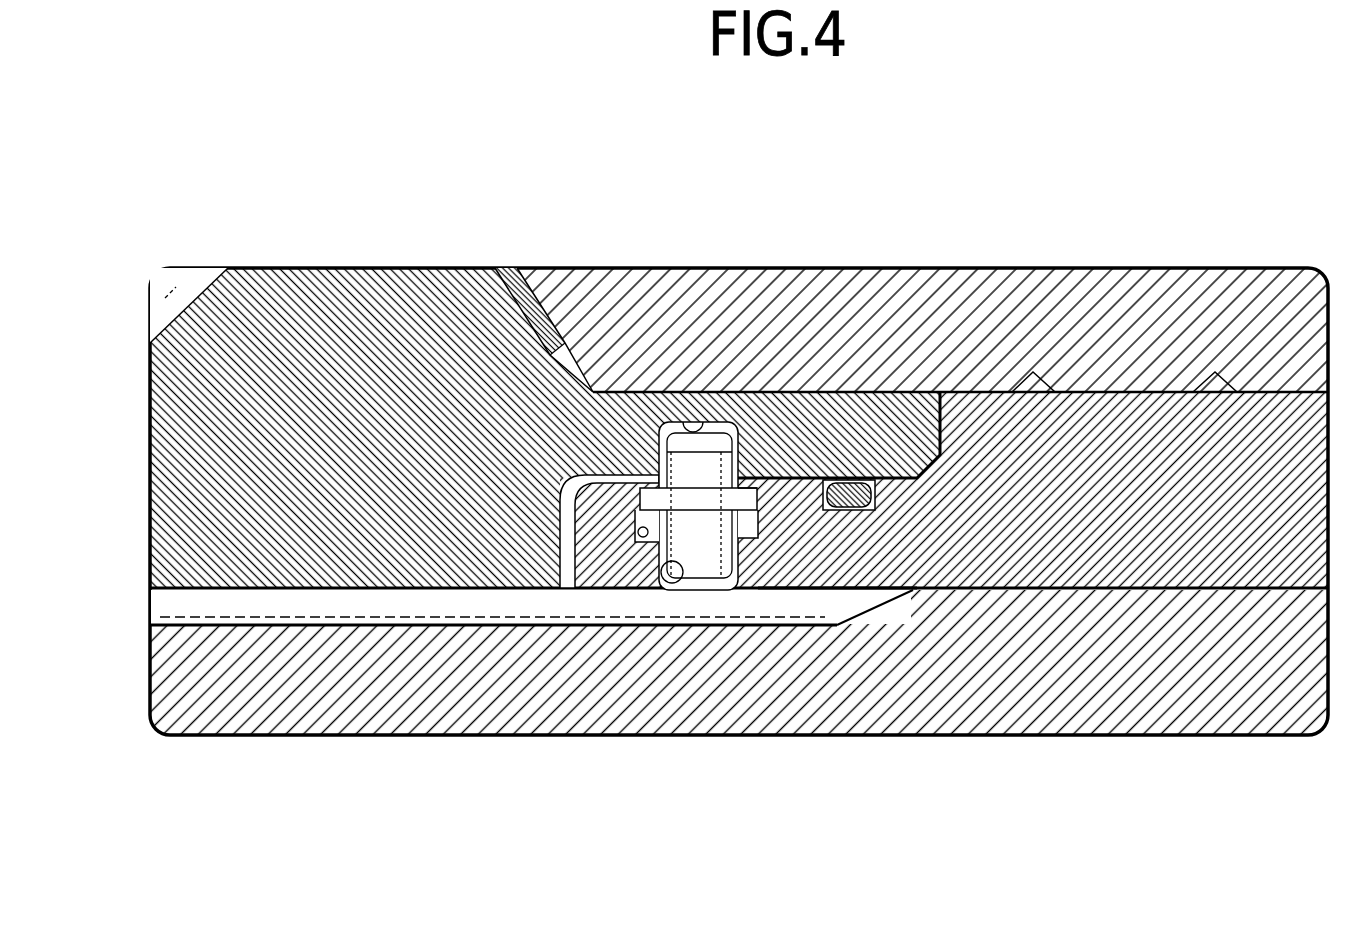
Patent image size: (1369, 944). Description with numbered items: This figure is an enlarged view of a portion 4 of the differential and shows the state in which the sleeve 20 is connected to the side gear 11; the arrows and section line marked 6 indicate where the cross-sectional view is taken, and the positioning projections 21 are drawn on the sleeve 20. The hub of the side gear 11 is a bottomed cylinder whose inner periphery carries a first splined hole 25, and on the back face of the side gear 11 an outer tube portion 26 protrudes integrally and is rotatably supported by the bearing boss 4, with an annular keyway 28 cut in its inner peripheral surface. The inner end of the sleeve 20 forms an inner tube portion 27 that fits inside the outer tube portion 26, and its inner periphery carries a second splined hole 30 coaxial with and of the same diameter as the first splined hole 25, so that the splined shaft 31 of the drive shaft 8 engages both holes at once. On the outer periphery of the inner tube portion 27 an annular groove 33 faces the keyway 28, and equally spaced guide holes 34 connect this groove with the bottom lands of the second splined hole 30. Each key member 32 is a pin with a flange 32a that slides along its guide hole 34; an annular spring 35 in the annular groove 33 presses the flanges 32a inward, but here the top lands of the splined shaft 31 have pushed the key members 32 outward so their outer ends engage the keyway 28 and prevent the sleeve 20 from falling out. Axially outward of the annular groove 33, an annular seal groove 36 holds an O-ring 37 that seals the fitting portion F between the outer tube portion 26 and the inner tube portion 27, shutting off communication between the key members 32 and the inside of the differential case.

The battery pack (battery module) 4 is at (955, 292).
The lower case (case member) 8 is at (967, 713).
The upper case member 11 is at (371, 445).
The base plate 20 is at (1108, 509).
The positioning projection 21 is at (1040, 378).
The flange portion 25 is at (280, 636).
The mounting block 26 is at (817, 392).
The bracket 27 is at (575, 533).
The bolt head recess 28 is at (693, 425).
The gap 30 is at (778, 607).
The channel 31 is at (412, 603).
The bolt 32 is at (702, 562).
The bolt flange 32a is at (697, 495).
The bracket edge 33 is at (641, 535).
The bolt tip 34 is at (680, 580).
The nut 35 is at (738, 492).
The seal groove 36 is at (860, 510).
The seal member 37 is at (872, 490).
The flow path F is at (802, 482).
The section line 6 is at (693, 152).